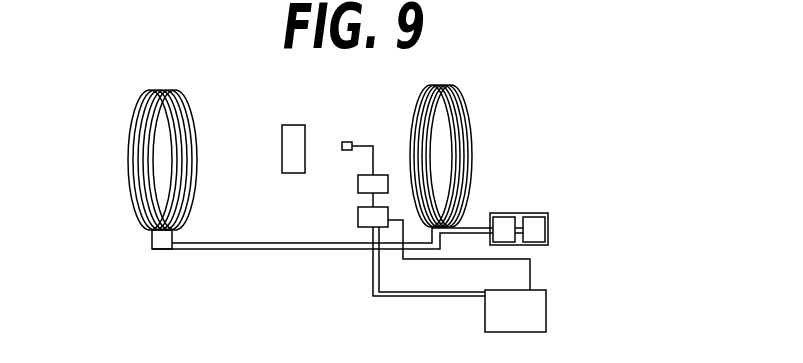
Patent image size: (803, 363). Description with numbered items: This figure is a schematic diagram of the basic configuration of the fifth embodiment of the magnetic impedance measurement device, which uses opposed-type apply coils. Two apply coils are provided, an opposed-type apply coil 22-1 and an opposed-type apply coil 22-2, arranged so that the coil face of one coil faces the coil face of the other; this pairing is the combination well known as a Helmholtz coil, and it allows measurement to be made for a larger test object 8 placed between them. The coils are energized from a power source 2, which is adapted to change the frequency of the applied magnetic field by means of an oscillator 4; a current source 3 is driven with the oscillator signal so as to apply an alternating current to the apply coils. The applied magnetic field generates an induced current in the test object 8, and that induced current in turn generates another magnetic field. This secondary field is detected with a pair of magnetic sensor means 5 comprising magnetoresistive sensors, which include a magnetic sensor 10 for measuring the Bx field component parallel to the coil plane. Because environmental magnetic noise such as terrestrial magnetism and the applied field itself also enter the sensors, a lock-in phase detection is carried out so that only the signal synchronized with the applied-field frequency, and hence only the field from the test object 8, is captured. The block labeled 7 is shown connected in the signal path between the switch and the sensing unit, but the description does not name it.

The opposed-type apply coil 22-2 is at (147, 93).
The opposed-type apply coil 22-1 is at (468, 130).
The test object 8 is at (285, 132).
The magnetic sensor means 5 is at (348, 142).
The control circuit 7 is at (363, 190).
The power source 2 is at (542, 213).
The current source 3 is at (502, 223).
The oscillator 4 is at (538, 235).
The magnetic sensor for Bx 10 is at (538, 318).